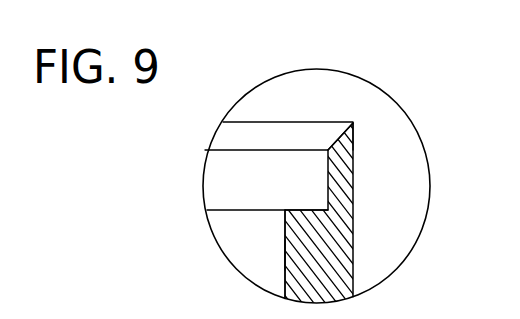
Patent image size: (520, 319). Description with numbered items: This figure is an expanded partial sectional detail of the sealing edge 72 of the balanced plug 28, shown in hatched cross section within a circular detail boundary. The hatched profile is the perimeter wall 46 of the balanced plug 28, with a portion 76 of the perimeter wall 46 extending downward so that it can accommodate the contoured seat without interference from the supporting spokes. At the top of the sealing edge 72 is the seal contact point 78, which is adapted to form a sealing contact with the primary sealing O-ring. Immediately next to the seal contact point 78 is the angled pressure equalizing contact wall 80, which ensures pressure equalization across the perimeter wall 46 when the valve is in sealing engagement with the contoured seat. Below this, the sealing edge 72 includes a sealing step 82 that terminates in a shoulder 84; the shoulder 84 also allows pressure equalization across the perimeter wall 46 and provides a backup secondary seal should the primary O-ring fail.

The balanced plug 28 is at (241, 264).
The perimeter wall 46 is at (355, 197).
The sealing edge 72 is at (366, 122).
The portion of perimeter wall 76 is at (283, 253).
The seal contact point 78 is at (352, 122).
The pressure equalizing contact wall 80 is at (337, 141).
The sealing step 82 is at (326, 190).
The shoulder 84 is at (290, 210).